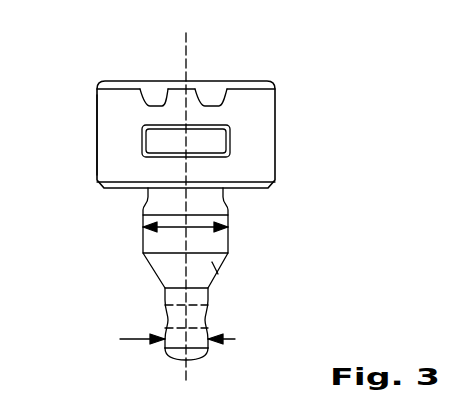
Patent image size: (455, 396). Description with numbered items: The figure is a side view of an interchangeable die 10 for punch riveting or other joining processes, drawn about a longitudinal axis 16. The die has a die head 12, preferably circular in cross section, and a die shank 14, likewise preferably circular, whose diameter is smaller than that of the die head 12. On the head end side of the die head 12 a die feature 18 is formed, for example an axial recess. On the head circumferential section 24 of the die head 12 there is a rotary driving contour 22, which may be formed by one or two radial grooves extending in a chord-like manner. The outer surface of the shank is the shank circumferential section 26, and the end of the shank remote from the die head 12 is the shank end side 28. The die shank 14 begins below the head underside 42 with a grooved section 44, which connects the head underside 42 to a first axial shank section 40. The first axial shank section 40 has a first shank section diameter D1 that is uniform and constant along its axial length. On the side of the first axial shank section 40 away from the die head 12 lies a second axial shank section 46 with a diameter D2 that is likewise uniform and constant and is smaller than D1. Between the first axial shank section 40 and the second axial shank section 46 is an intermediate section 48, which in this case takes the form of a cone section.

The interchangeable die 10 is at (312, 75).
The die head 12 is at (276, 109).
The die shank 14 is at (217, 277).
The longitudinal axis 16 is at (187, 42).
The die feature 18 is at (158, 106).
The rotary driving contour 22 is at (144, 142).
The head circumferential section 24 is at (97, 103).
The shank circumferential section 26 is at (152, 268).
The shank end side 28 is at (180, 362).
The first axial shank section 40 is at (223, 240).
The head underside 42 is at (129, 198).
The grooved section 44 is at (226, 193).
The second axial shank section 46 is at (200, 341).
The intermediate section 48 is at (206, 265).
The first shank section diameter D1 is at (168, 231).
The second shank section diameter D2 is at (131, 339).